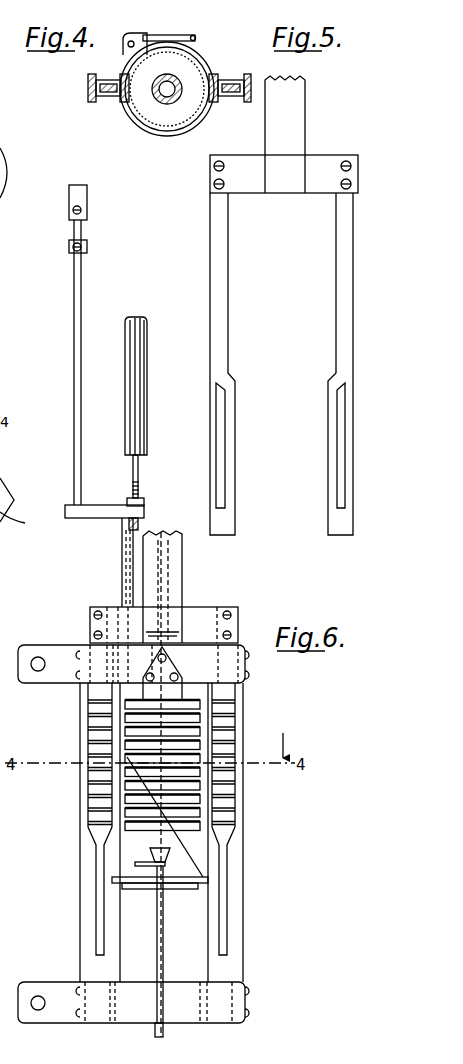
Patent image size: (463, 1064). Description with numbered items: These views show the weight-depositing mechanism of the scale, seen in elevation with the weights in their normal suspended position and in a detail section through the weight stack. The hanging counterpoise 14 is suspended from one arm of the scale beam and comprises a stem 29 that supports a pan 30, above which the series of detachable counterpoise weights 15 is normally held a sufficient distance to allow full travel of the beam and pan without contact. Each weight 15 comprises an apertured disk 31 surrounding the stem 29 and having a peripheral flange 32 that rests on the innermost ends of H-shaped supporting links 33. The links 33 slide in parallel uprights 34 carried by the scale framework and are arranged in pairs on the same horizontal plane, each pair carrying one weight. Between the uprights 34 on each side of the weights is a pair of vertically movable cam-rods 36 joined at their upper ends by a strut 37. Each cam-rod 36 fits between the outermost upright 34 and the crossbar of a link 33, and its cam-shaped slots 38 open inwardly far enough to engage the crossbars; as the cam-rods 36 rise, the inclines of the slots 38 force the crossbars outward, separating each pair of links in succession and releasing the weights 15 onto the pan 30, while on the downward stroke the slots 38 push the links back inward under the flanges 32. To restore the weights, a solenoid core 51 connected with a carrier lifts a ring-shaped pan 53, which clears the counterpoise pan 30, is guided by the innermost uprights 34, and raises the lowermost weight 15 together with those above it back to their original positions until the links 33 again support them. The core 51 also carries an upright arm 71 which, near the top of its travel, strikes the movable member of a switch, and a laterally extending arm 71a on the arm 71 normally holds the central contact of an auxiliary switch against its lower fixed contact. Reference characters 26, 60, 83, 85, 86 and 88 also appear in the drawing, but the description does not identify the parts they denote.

In FIG. 4, the stem 29 is at (166, 103).
In FIG. 4, the apertured disk 31 is at (191, 62).
In FIG. 4, the peripheral flange 32 is at (213, 63).
In FIG. 6, the peripheral flange 32 is at (185, 704).
In FIG. 5, the strut 37 is at (318, 154).
In FIG. 5, the cam-rod 36 is at (350, 241).
In FIG. 5, the cam-shaped slot 38 is at (222, 441).
In FIG. 6, the cam-shaped slot 38 is at (100, 918).
In FIG. 6, the wheel 60 is at (6, 157).
In FIG. 6, the upright arm 71 is at (82, 298).
In FIG. 6, the laterally extending arm 71a is at (88, 247).
In FIG. 6, the core 51 is at (147, 373).
In FIG. 6, the lever 26 is at (22, 522).
In FIG. 6, the member 83 is at (0, 558).
In FIG. 6, the member 85 is at (12, 599).
In FIG. 6, the member 86 is at (0, 620).
In FIG. 6, the member 88 is at (5, 640).
In FIG. 6, the H-shaped supporting link 33 is at (228, 714).
In FIG. 6, the detachable counterpoise weight 15 is at (185, 733).
In FIG. 6, the parallel upright 34 is at (240, 847).
In FIG. 6, the pan 30 is at (142, 862).
In FIG. 6, the pan 53 is at (151, 889).
In FIG. 6, the hanging counterpoise 14 is at (156, 951).